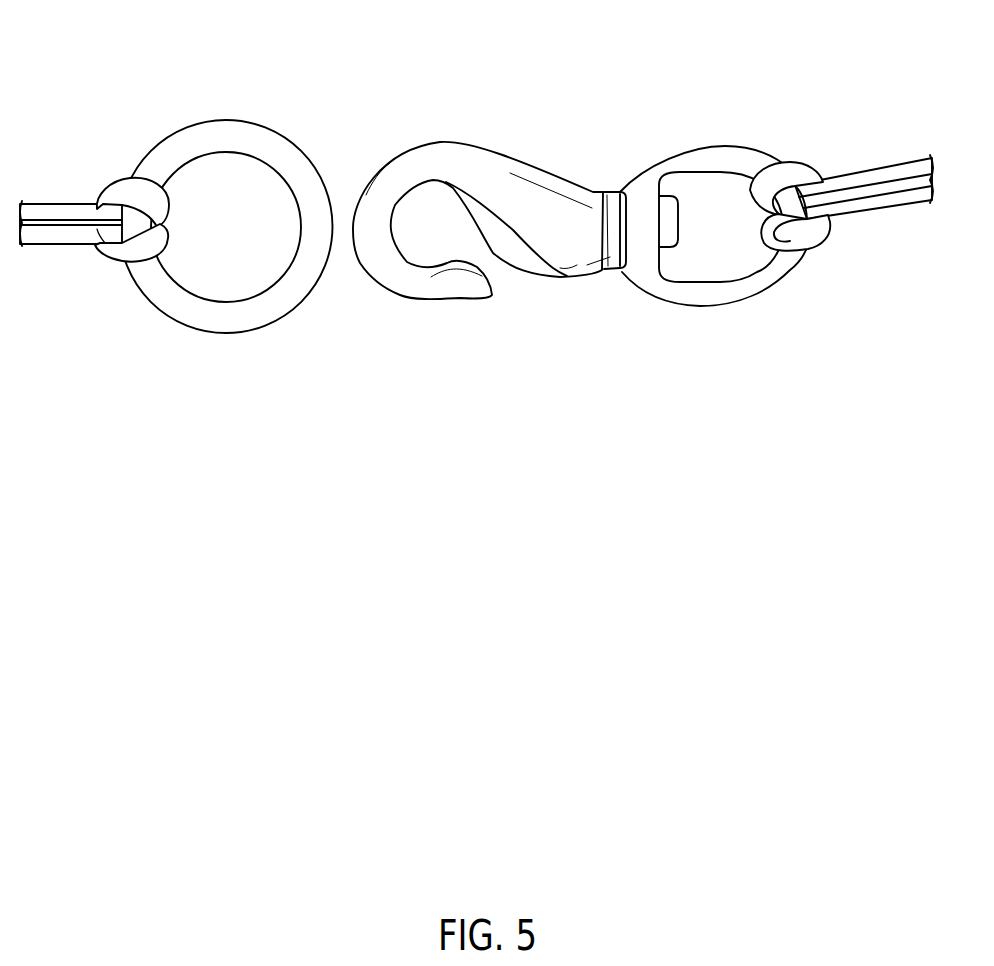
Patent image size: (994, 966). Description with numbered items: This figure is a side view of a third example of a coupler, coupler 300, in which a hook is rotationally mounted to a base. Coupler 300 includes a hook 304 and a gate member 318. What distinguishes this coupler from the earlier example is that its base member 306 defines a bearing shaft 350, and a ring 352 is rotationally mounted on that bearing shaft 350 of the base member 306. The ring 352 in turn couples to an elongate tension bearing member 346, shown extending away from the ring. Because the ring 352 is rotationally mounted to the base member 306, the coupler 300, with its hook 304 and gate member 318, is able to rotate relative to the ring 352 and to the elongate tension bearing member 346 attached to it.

The coupler 300 is at (476, 171).
The hook 304 is at (468, 148).
The base member 306 is at (712, 212).
The gate member 318 is at (542, 277).
The elongate tension bearing member 346 is at (853, 182).
The bearing shaft 350 is at (680, 222).
The ring 352 is at (775, 273).